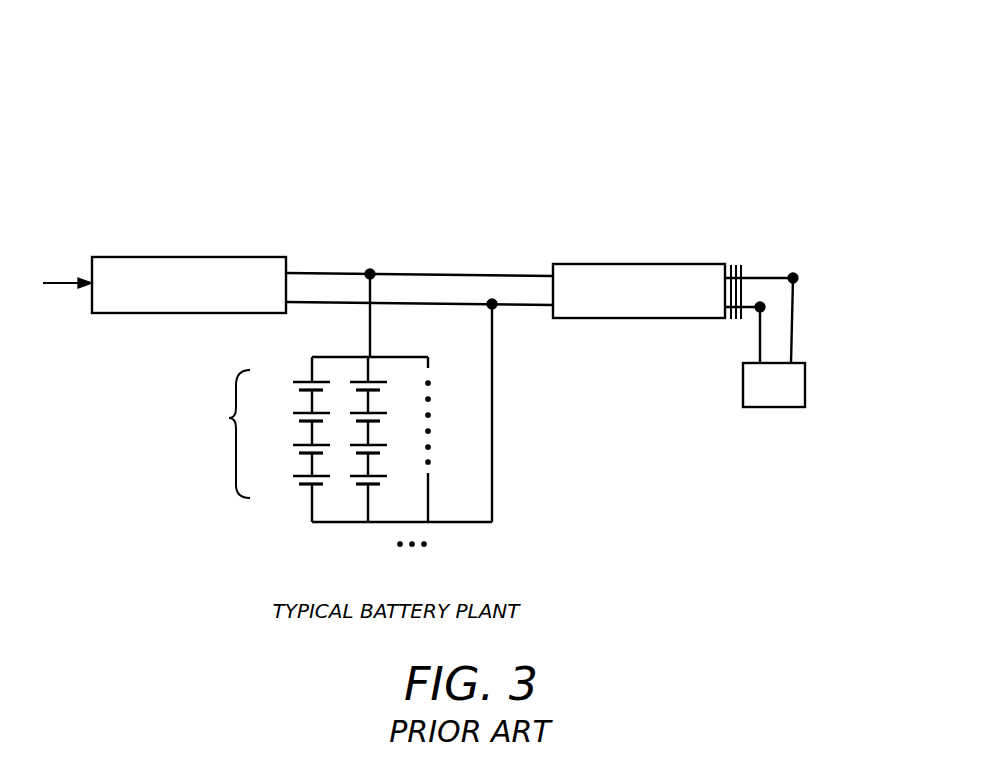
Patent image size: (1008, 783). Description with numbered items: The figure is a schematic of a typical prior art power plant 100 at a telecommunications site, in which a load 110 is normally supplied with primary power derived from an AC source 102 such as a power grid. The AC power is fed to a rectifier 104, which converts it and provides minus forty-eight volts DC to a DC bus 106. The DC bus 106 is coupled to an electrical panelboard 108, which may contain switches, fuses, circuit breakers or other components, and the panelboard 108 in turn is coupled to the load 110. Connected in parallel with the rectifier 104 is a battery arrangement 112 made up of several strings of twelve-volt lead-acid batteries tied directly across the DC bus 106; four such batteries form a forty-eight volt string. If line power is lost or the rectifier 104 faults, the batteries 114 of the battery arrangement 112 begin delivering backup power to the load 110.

The power plant 100 is at (394, 78).
The AC source 102 is at (52, 258).
The rectifier 104 is at (180, 257).
The DC bus 106 is at (458, 274).
The electrical panelboard 108 is at (580, 264).
The load 110 is at (783, 407).
The battery arrangement 112 is at (381, 413).
The batteries 114 is at (288, 487).